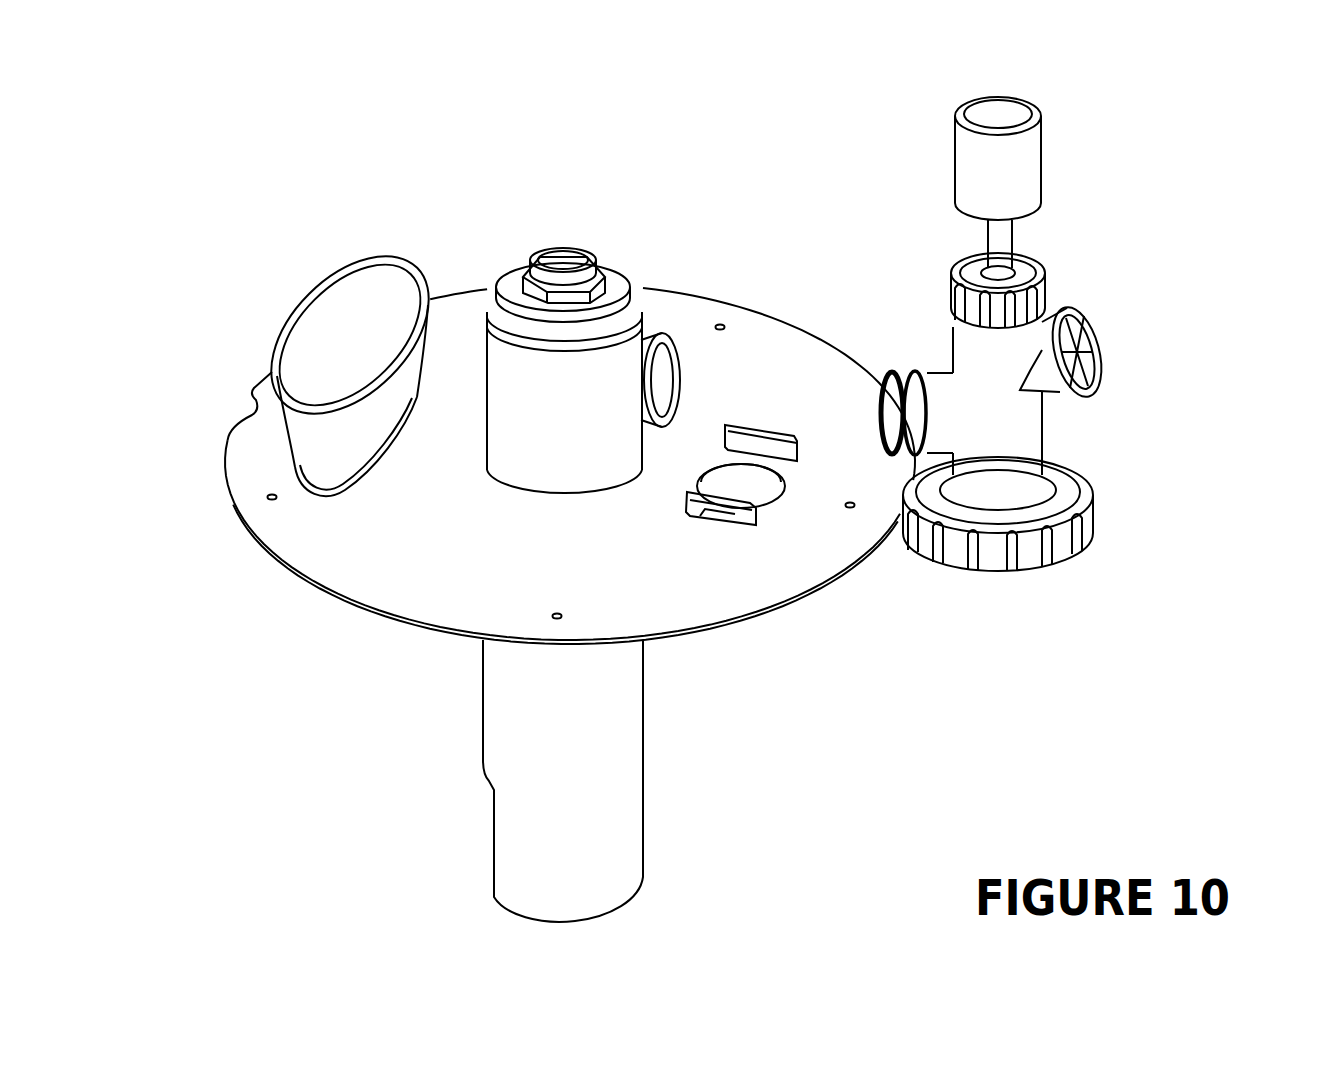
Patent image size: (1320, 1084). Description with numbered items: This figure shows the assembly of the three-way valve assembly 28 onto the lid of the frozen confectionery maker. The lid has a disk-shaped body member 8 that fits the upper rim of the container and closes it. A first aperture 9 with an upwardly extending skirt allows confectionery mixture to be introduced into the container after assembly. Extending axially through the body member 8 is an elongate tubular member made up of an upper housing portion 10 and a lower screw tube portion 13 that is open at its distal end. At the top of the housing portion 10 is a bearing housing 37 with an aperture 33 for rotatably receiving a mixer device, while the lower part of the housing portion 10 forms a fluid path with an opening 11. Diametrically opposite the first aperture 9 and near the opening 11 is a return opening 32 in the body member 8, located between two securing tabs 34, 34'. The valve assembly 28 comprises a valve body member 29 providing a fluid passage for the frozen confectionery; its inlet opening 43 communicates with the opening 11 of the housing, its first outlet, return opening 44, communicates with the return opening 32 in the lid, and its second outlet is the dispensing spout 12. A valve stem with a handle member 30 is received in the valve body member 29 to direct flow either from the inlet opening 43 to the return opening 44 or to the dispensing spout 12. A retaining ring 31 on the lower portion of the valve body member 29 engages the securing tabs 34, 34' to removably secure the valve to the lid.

The body member 8 is at (359, 559).
The first aperture 9 is at (340, 333).
The upper housing portion 10 is at (590, 323).
The opening 11 is at (657, 385).
The dispensing spout 12 is at (1095, 350).
The lower screw tube portion 13 is at (525, 714).
The three-way valve assembly 28 is at (1082, 389).
The valve body member 29 is at (997, 448).
The handle member 30 is at (1012, 180).
The retaining ring 31 is at (1090, 530).
The return opening 32 is at (758, 485).
The aperture 33 is at (569, 280).
The securing tab 34 is at (755, 651).
The securing tab 34' is at (802, 314).
The bearing housing 37 is at (613, 285).
The inlet opening 43 is at (876, 417).
The return opening 44 is at (990, 580).